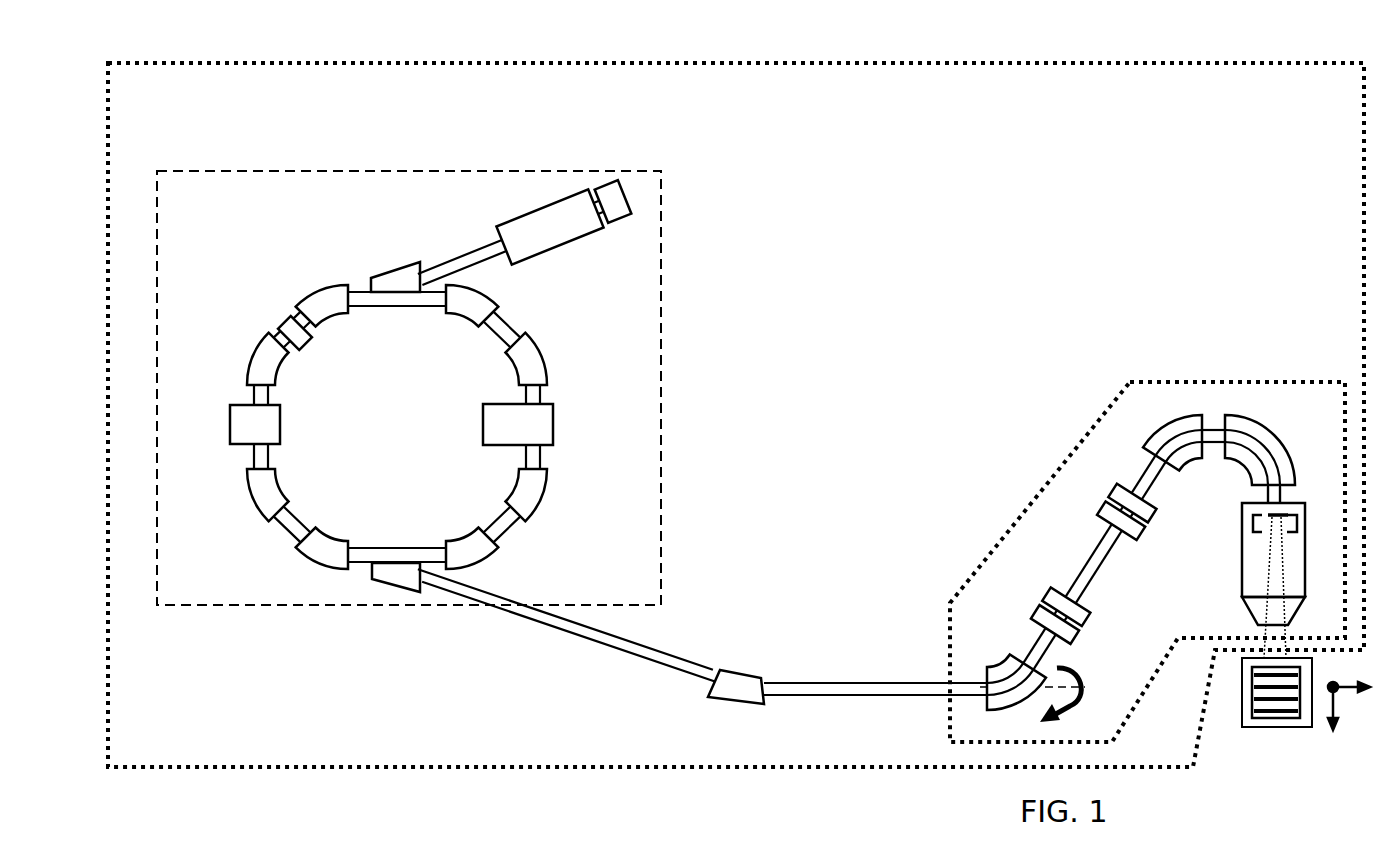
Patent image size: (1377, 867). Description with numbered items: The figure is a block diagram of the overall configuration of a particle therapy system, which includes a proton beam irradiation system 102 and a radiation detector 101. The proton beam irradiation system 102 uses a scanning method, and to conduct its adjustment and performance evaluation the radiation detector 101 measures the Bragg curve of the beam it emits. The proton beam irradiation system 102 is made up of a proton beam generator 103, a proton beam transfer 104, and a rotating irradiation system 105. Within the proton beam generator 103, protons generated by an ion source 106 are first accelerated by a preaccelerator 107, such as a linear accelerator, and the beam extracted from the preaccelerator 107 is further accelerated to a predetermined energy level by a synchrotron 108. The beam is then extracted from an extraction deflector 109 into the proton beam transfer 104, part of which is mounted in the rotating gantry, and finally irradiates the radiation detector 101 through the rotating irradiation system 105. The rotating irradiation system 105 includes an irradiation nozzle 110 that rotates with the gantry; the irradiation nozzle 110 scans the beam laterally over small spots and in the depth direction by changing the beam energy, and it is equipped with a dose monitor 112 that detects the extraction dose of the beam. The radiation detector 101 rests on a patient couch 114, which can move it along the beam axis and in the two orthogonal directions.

The radiation detector 101 is at (1252, 695).
The proton beam irradiation system 102 is at (188, 63).
The proton beam generator 103 is at (225, 171).
The proton beam transfer 104 is at (772, 677).
The rotating irradiation system 105 is at (1178, 380).
The ion source 106 is at (598, 180).
The preaccelerator 107 is at (552, 228).
The synchrotron 108 is at (268, 346).
The extraction deflector 109 is at (402, 580).
The irradiation nozzle 110 is at (1252, 580).
The dose monitor 112 is at (1287, 510).
The patient couch 114 is at (1283, 727).